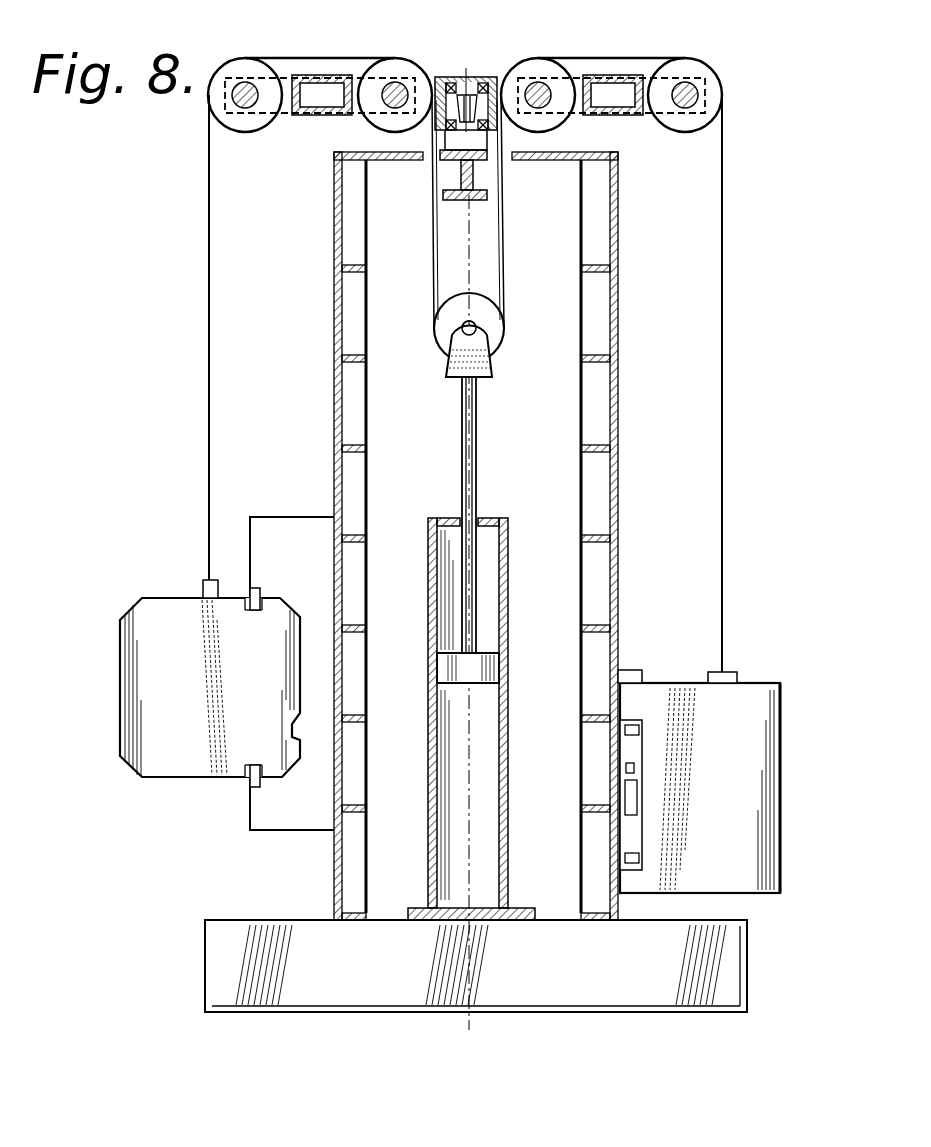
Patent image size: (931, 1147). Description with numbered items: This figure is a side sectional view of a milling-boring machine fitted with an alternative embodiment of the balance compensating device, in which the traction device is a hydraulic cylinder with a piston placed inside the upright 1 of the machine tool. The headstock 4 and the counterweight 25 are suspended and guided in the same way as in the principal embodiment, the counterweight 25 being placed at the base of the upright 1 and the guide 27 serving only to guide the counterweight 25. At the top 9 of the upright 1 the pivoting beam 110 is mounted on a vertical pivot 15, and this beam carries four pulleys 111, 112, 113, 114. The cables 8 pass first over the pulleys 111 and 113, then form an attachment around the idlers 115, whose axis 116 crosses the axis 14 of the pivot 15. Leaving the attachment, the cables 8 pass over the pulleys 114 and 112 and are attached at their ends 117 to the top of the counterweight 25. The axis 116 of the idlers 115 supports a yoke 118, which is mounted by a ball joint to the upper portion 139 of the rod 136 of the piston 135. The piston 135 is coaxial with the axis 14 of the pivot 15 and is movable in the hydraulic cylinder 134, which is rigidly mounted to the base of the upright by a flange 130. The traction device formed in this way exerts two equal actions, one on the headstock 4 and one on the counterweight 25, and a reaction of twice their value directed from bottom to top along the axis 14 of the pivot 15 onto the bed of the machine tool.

The upright 1 is at (385, 843).
The headstock 4 is at (180, 765).
The cables 8 is at (208, 386).
The top of the upright 9 is at (462, 200).
The axis of the pivot 14 is at (468, 256).
The vertical pivot 15 is at (478, 73).
The counterweight 25 is at (763, 855).
The guide 27 is at (637, 670).
The pivoting beam 110 is at (626, 76).
The pulley 111 is at (237, 66).
The pulley 112 is at (715, 82).
The pulley 113 is at (414, 54).
The pulley 114 is at (546, 68).
The idlers 115 is at (497, 333).
The axis of the pulleys 116 is at (462, 331).
The ends of the cables 117 is at (736, 677).
The yoke 118 is at (456, 373).
The flange 130 is at (427, 912).
The hydraulic cylinder 134 is at (504, 820).
The piston 135 is at (481, 685).
The rod 136 is at (470, 560).
The upper portion of the rod 139 is at (474, 394).